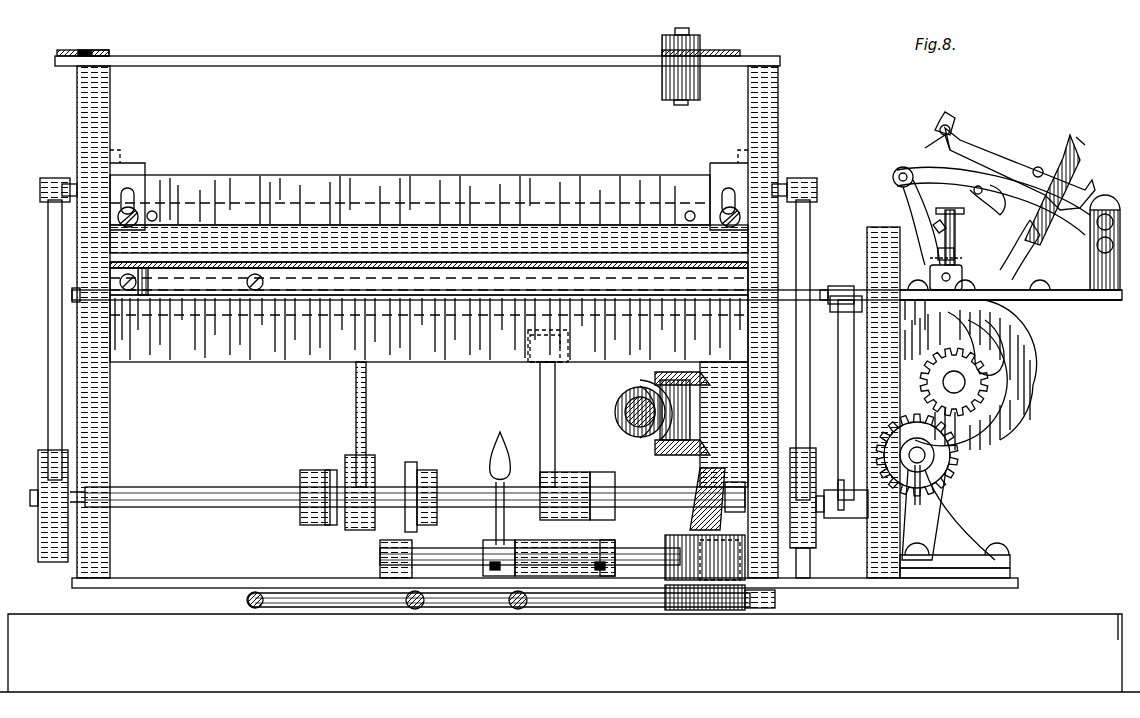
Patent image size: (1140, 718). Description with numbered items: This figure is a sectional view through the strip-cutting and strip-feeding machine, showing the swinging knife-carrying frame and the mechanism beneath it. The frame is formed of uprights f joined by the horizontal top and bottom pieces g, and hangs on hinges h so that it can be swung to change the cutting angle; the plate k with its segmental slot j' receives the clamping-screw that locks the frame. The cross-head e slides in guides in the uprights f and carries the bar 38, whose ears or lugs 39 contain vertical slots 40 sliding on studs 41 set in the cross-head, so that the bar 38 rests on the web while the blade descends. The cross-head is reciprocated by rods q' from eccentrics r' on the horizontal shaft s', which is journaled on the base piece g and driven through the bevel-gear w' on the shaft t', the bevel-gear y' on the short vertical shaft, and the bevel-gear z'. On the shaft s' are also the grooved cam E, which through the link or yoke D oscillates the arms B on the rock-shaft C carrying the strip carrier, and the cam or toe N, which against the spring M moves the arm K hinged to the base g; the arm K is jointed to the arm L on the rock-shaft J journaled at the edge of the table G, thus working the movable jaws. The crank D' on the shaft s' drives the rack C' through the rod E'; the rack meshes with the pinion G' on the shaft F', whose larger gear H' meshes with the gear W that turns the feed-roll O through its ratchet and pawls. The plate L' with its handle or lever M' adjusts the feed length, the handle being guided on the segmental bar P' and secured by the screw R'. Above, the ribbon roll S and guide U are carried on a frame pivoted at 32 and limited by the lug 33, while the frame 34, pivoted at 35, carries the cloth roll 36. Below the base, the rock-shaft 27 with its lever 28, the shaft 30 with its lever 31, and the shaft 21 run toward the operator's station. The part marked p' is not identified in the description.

The segmental slot j' is at (83, 43).
The plate k is at (100, 56).
The top and bottom pieces g is at (232, 580).
The hinge h is at (701, 57).
The upright f is at (778, 100).
The ear or lug 39 is at (134, 173).
The vertical slot 40 is at (134, 194).
The stud 41 is at (118, 219).
The cross-head e is at (410, 189).
The bar 38 is at (425, 232).
The table G is at (568, 302).
The rock-shaft J is at (818, 290).
The rod q' is at (426, 339).
The eccentric r' is at (41, 506).
The gear p' is at (818, 498).
The lever 31 is at (812, 562).
The rod E' is at (837, 398).
The rack C' is at (833, 479).
The crank D' is at (842, 492).
The arm B is at (366, 390).
The arm K is at (540, 420).
The arm L is at (540, 358).
The shaft t' is at (626, 412).
The bevel-gear w' is at (631, 412).
The bevel-gear y' is at (668, 422).
The blade-operating shaft s' is at (407, 485).
The bevel-gear z' is at (717, 489).
The cam E is at (375, 482).
The link or yoke D is at (457, 485).
The lever 28 is at (496, 526).
The rock-shaft C is at (530, 554).
The cam or toe N is at (548, 524).
The spring M is at (572, 547).
The rock-shaft 27 is at (246, 602).
The shaft 21 is at (415, 610).
The shaft 30 is at (518, 610).
The gear W is at (990, 388).
The feed-roll O is at (1025, 372).
The plate L' is at (993, 342).
The gear H' is at (940, 455).
The pinion G' is at (942, 463).
The shaft F' is at (955, 521).
The lug 33 is at (990, 224).
The guide U is at (933, 228).
The roll S is at (918, 168).
The frame 34 is at (1020, 169).
The roll 36 is at (952, 125).
The segmental bar P' is at (933, 138).
The screw R' is at (1065, 190).
The pivot 35 is at (1108, 212).
The pivot 32 is at (1110, 248).
The handle or lever M' is at (1023, 250).